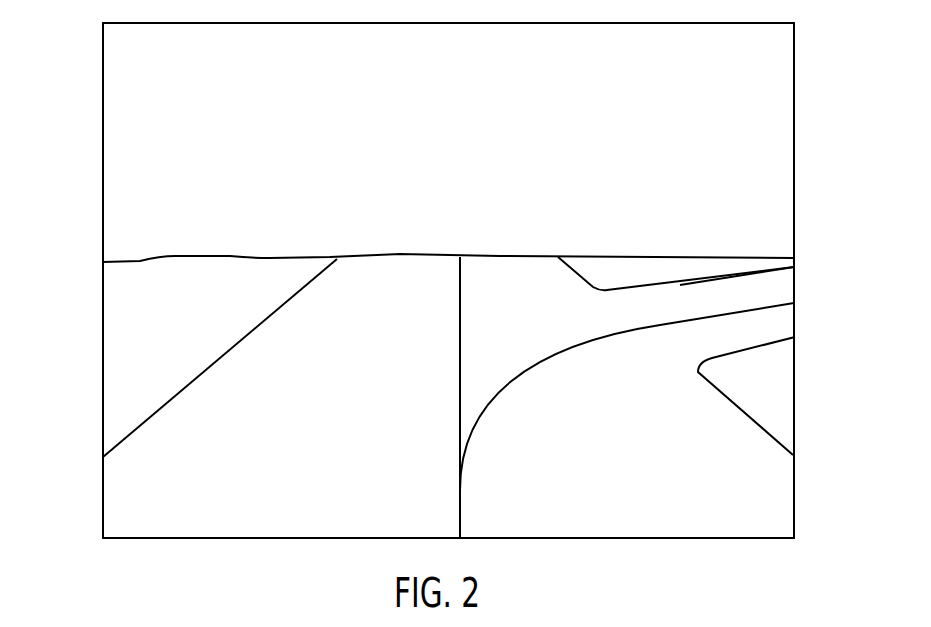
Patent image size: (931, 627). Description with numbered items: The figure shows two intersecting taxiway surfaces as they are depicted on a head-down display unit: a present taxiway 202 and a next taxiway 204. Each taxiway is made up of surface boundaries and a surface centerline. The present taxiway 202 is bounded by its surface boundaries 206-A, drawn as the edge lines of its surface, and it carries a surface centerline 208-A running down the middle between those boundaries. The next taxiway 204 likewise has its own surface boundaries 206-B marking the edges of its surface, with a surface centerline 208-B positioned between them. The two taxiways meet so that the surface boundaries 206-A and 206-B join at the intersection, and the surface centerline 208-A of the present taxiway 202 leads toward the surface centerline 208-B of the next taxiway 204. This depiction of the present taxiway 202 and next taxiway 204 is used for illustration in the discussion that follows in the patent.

The present taxiway 202 is at (240, 460).
The next taxiway 204 is at (765, 282).
The surface boundaries 206-A is at (571, 262).
The surface boundaries 206-B is at (732, 352).
The surface centerline 208-A is at (460, 310).
The surface centerline 208-B is at (777, 345).